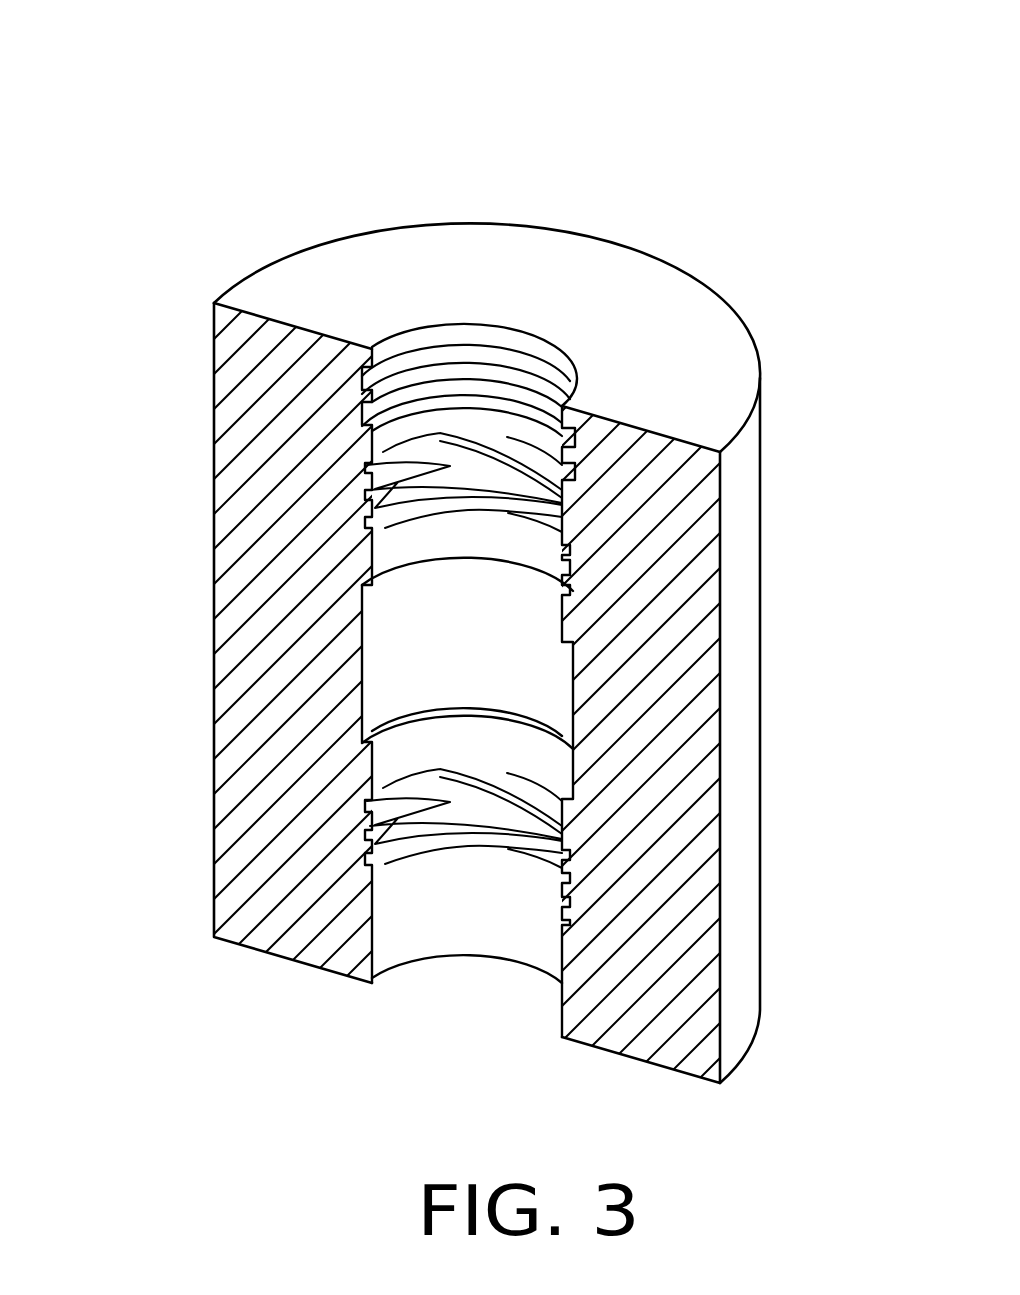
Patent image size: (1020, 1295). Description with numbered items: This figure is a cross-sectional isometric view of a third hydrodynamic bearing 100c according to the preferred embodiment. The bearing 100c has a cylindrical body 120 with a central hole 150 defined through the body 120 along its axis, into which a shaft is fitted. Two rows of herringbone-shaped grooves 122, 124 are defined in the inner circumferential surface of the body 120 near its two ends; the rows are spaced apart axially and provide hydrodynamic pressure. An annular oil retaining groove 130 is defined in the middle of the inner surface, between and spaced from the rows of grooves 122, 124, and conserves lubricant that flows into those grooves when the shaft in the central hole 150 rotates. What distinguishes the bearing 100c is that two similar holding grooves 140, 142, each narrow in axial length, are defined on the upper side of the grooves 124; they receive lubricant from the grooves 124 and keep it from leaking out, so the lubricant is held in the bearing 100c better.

The hydrodynamic bearing 100c is at (532, 46).
The cylindrical body 120 is at (678, 360).
The holding groove 140 is at (532, 393).
The holding groove 142 is at (450, 348).
The herringbone-shaped grooves 124 is at (565, 508).
The herringbone-shaped grooves 122 is at (392, 828).
The oil retaining groove 130 is at (391, 665).
The central hole 150 is at (402, 925).